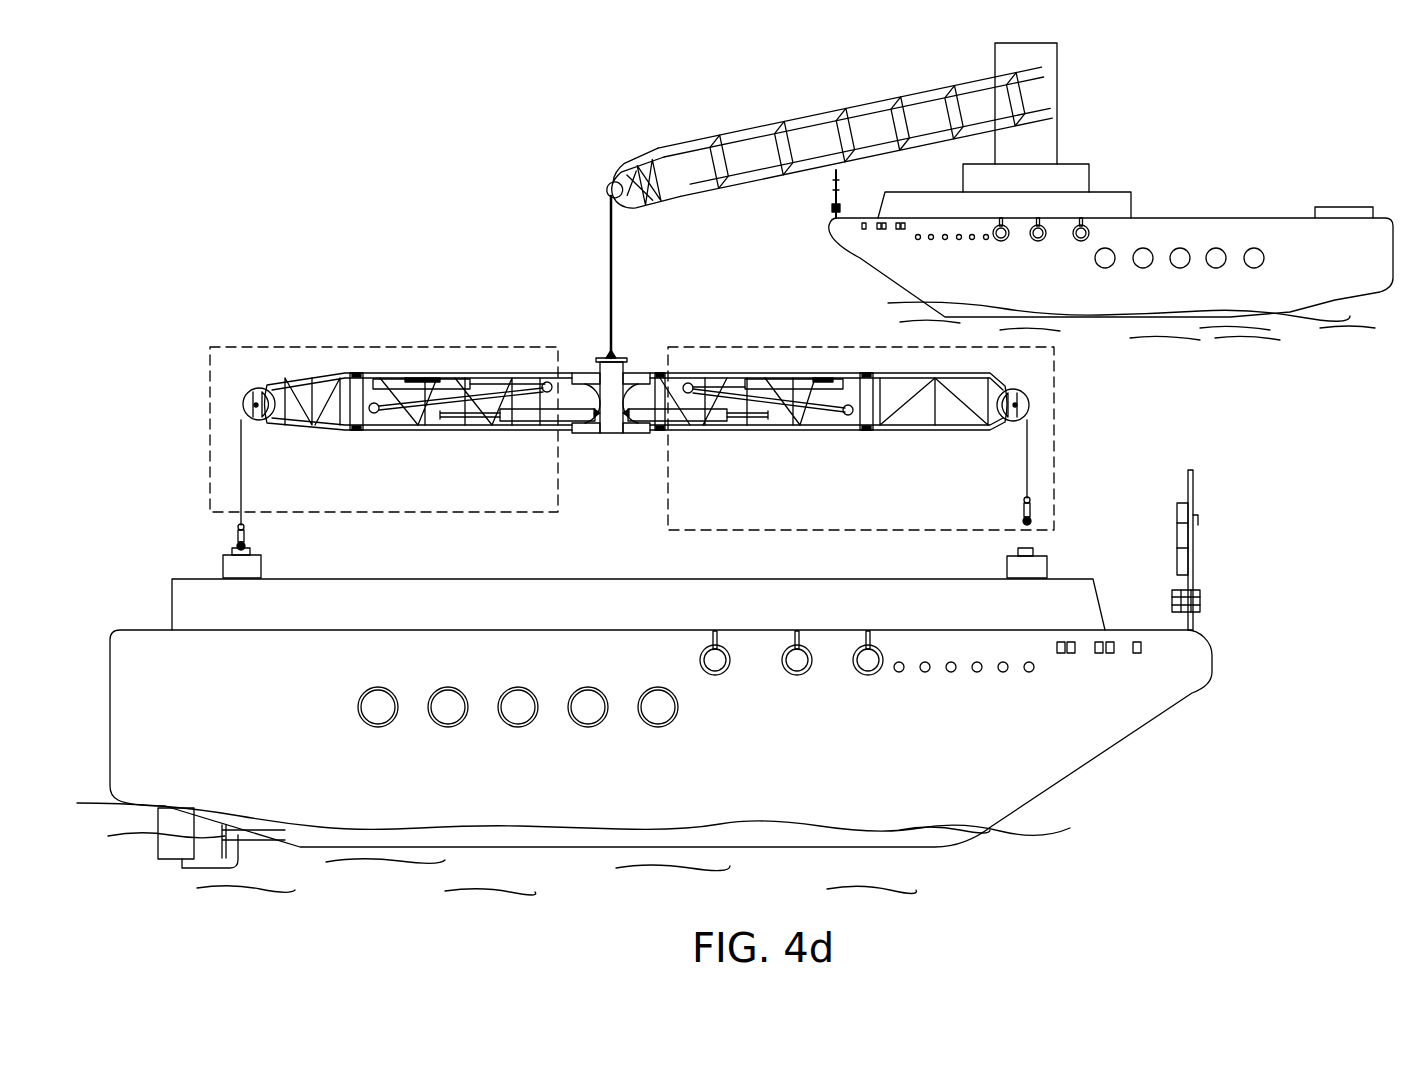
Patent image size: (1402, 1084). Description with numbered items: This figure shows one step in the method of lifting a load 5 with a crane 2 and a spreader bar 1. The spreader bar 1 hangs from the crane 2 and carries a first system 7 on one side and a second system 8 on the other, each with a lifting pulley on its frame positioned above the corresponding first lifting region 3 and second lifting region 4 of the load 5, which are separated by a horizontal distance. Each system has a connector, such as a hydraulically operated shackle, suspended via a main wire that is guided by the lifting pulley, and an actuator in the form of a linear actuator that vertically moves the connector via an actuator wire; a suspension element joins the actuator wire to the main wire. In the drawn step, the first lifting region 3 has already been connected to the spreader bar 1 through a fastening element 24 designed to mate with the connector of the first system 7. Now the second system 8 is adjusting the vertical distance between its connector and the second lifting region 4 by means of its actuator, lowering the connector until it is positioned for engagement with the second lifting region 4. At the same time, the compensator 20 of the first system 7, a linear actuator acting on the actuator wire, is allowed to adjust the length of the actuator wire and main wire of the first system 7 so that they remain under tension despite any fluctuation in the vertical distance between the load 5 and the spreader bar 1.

The spreader bar 1 is at (640, 387).
The crane 2 is at (762, 127).
The first lifting region 3 is at (644, 682).
The second lifting region 4 is at (1078, 604).
The load 5 is at (612, 592).
The first system 7 is at (375, 429).
The second system 8 is at (877, 429).
The compensator 20 is at (457, 380).
The fastening element 24 is at (232, 549).